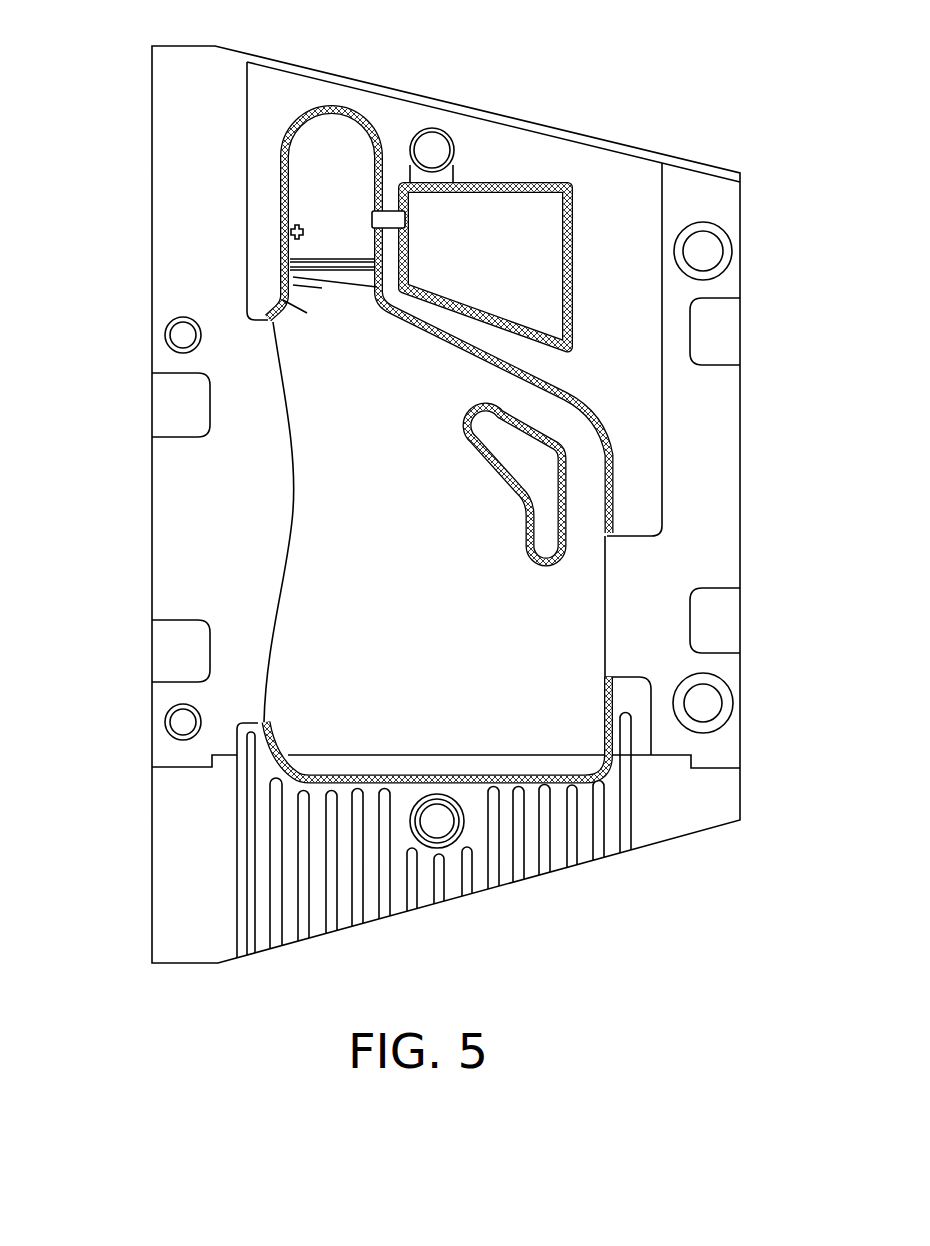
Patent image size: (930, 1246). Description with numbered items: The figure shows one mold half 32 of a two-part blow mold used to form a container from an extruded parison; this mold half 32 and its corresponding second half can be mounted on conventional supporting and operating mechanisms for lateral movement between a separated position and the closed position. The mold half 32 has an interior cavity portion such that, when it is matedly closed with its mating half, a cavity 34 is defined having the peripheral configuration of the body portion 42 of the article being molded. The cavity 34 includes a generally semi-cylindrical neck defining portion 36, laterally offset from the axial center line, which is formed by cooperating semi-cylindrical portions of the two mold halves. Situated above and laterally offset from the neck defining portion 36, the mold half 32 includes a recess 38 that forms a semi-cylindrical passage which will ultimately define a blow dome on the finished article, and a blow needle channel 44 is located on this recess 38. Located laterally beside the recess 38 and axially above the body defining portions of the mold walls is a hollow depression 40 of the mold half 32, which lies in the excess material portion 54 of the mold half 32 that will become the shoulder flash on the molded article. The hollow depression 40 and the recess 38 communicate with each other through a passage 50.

The mold half 32 is at (693, 170).
The cavity 34 is at (335, 553).
The neck defining portion 36 is at (278, 296).
The recess 38 is at (308, 195).
The hollow depression 40 is at (495, 240).
The body portion 42 is at (320, 448).
The blow needle channel 44 is at (295, 230).
The passage 50 is at (393, 211).
The excess material portion 54 is at (605, 213).